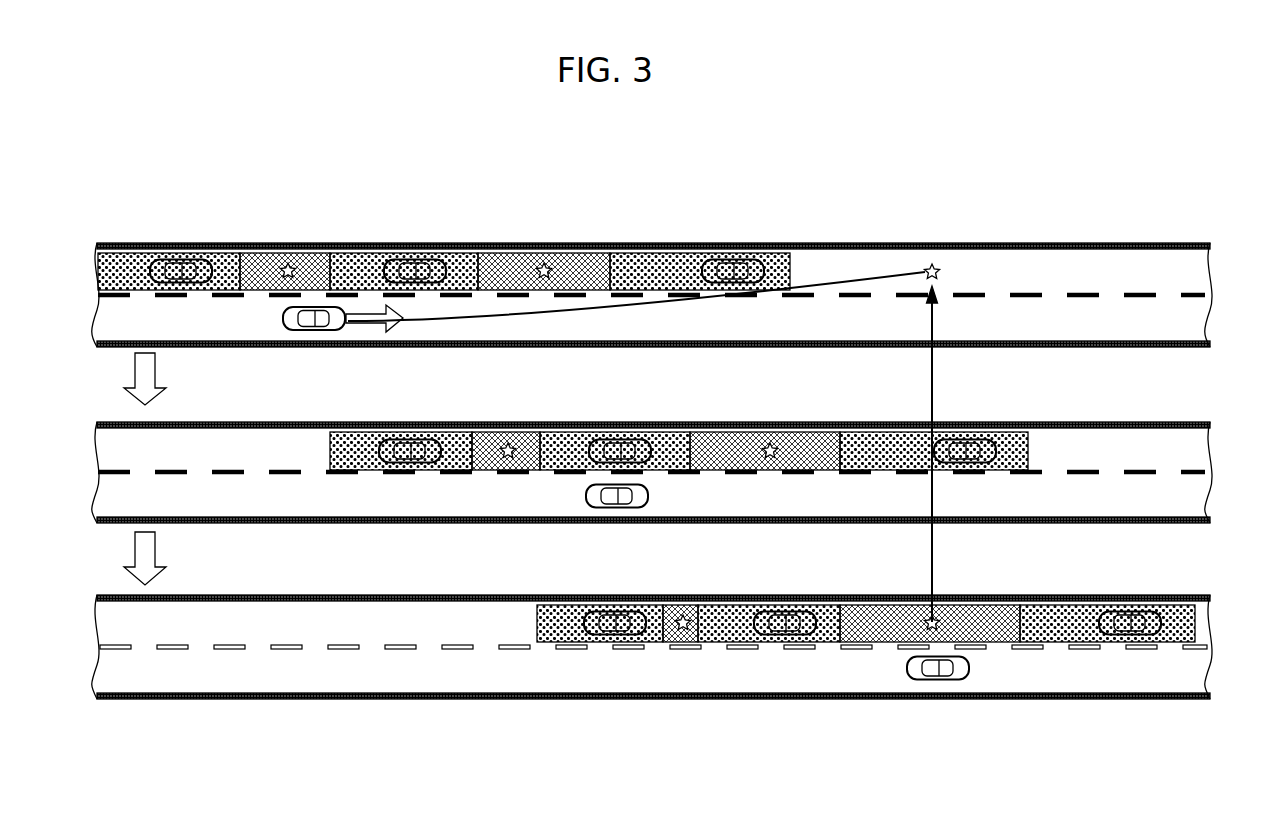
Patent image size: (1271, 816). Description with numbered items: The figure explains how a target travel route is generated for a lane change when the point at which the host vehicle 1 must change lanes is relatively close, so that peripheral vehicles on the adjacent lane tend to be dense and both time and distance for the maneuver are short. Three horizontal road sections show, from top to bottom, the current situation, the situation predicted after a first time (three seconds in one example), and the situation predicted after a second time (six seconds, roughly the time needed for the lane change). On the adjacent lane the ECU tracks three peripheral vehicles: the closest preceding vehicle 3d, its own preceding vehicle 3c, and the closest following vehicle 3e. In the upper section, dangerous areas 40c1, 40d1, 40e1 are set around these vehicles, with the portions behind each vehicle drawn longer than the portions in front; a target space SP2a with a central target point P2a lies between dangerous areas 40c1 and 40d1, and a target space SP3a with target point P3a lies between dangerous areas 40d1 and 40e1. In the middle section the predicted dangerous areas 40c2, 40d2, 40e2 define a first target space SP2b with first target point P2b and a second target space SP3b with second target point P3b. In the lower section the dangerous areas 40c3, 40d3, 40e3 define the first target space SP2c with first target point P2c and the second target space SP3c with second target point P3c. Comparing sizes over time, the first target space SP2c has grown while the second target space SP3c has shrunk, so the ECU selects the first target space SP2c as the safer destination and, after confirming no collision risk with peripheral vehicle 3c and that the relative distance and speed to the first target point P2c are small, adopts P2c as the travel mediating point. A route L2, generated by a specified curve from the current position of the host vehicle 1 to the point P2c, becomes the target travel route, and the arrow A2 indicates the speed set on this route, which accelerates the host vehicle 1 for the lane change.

The host vehicle 1 is at (310, 332).
The peripheral vehicle 3c is at (730, 262).
The peripheral vehicle 3d is at (420, 262).
The peripheral vehicle 3e is at (185, 262).
The dangerous area 40e1 is at (130, 262).
The dangerous area 40d1 is at (370, 262).
The dangerous area 40c1 is at (630, 262).
The dangerous area 40e2 is at (365, 440).
The dangerous area 40d2 is at (585, 440).
The dangerous area 40c2 is at (880, 440).
The dangerous area 40e3 is at (565, 612).
The dangerous area 40d3 is at (730, 612).
The dangerous area 40c3 is at (1050, 612).
The target space SP3a is at (250, 262).
The target space SP2a is at (505, 262).
The second target space SP3b is at (490, 440).
The first target space SP2b is at (735, 440).
The second target space SP3c is at (675, 645).
The first target space SP2c is at (900, 612).
The target point P3a is at (291, 264).
The target point P2a is at (547, 264).
The second target point P3b is at (512, 445).
The first target point P2b is at (775, 445).
The second target point P3c is at (690, 645).
The first target point P2c is at (940, 266).
The route L2 is at (830, 278).
The arrow A2 is at (387, 323).